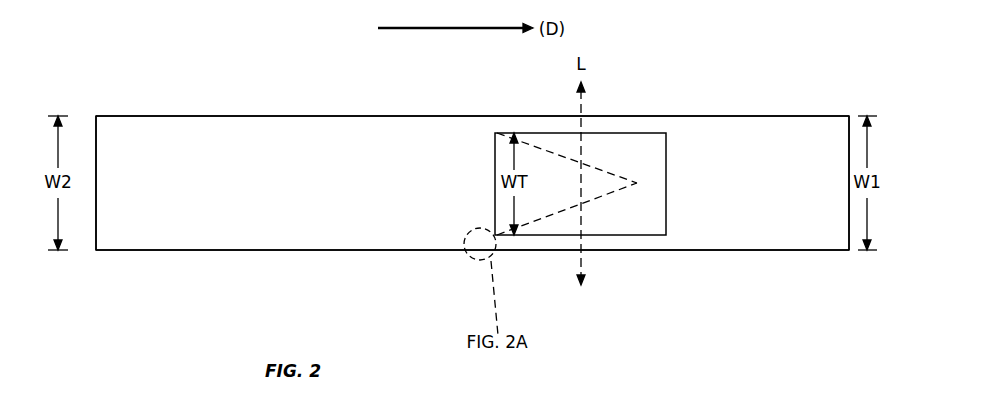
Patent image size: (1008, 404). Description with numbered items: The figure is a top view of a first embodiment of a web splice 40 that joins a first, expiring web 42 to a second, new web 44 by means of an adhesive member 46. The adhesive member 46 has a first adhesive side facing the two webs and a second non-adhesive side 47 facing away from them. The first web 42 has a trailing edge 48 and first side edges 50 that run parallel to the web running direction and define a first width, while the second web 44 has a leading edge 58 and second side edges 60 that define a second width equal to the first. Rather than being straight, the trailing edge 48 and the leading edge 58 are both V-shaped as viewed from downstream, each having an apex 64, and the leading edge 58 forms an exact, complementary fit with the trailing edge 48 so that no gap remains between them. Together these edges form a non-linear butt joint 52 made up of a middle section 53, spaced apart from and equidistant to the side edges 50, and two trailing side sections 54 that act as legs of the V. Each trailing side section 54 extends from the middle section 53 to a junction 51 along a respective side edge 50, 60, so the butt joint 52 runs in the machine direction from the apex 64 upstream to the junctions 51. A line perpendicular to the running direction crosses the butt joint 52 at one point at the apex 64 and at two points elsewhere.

The web splice 40 is at (242, 84).
The first web 42 is at (620, 116).
The second web 44 is at (178, 116).
The adhesive member 46 is at (646, 242).
The second non-adhesive side 47 is at (604, 145).
The trailing edge 48 is at (497, 235).
The first side edges 50 is at (795, 116).
The junction 51 is at (497, 133).
The butt joint 52 is at (478, 287).
The middle section 53 is at (613, 193).
The trailing side sections 54 is at (534, 133).
The leading edge 58 is at (590, 205).
The second side edges 60 is at (350, 116).
The apex 64 is at (637, 183).